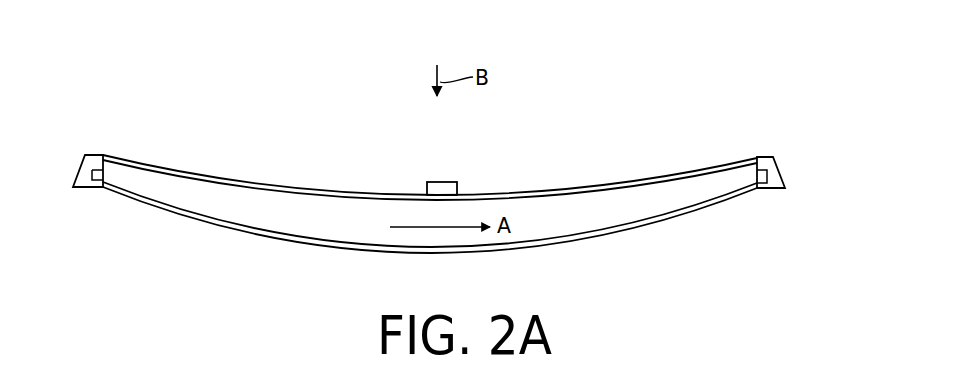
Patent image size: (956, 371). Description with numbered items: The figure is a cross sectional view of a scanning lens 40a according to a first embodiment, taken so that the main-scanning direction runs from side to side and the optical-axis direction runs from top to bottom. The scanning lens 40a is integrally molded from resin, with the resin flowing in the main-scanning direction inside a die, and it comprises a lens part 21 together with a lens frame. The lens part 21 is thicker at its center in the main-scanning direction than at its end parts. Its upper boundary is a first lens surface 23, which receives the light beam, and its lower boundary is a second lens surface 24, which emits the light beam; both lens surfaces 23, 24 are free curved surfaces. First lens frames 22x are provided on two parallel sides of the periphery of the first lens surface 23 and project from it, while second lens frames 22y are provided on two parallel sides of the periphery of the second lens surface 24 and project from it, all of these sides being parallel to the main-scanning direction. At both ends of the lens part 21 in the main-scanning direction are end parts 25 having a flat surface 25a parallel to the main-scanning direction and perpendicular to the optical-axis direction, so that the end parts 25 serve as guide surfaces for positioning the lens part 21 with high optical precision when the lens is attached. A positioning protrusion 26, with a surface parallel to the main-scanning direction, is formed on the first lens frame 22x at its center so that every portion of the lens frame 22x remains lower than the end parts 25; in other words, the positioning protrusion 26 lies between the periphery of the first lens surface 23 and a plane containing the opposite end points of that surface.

The scanning lens 40a is at (448, 172).
The lens part 21 is at (430, 203).
The first lens frames 22x is at (634, 180).
The second lens frames 22y is at (637, 228).
The first lens surface 23 is at (353, 192).
The second lens surface 24 is at (321, 247).
The end parts 25 is at (82, 188).
The end support top face 25a is at (93, 155).
The positioning protrusion 26 is at (440, 182).